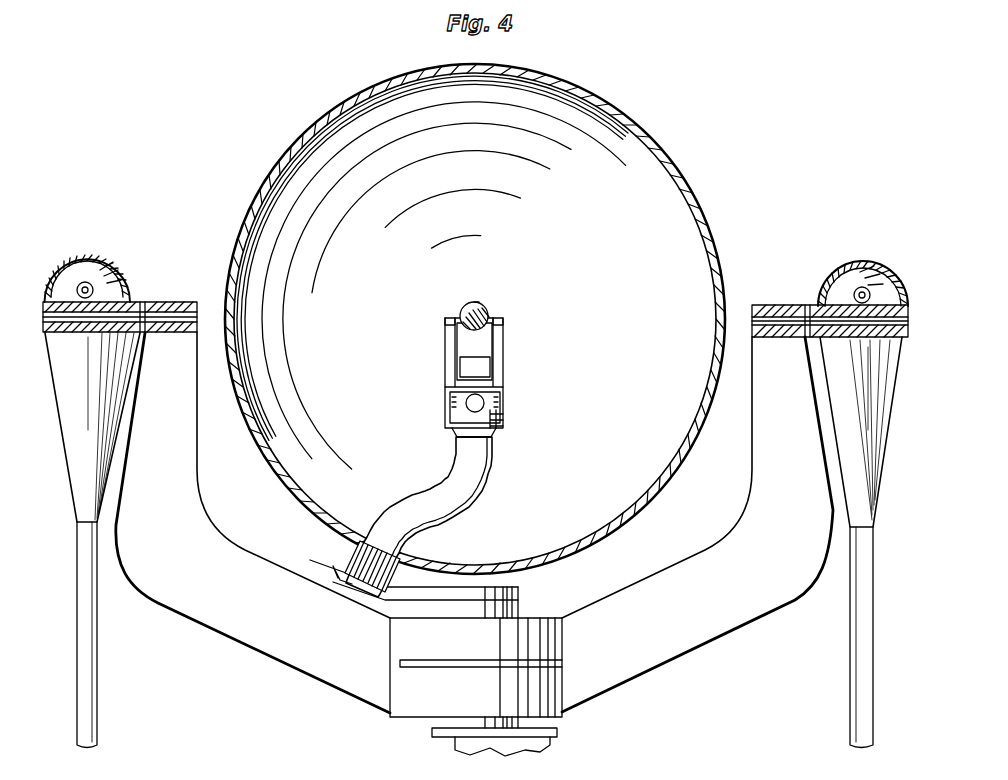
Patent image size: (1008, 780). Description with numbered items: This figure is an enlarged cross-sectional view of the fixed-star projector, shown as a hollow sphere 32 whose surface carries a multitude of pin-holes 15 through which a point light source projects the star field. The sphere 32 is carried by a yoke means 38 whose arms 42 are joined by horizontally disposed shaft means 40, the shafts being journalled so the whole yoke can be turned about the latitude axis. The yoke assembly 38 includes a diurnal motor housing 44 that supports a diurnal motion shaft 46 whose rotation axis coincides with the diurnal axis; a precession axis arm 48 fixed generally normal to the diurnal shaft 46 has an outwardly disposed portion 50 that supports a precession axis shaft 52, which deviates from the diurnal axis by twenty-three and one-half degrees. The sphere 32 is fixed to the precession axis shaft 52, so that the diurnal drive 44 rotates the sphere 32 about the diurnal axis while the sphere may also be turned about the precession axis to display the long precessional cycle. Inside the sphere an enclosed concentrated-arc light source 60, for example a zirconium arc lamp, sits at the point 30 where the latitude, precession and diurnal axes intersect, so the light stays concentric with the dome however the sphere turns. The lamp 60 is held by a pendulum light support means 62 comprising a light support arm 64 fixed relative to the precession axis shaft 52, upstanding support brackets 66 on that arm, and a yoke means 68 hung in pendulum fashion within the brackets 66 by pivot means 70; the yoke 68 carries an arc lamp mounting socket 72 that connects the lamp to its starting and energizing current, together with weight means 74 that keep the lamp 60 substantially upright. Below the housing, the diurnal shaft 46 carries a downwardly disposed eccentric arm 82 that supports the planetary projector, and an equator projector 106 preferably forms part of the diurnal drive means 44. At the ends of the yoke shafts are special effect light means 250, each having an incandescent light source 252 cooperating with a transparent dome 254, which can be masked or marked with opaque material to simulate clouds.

The pin-holes 15 is at (363, 291).
The intersection point of axes 30 is at (488, 312).
The hollow sphere 32 is at (637, 142).
The yoke means 38 is at (496, 668).
The horizontally disposed shaft means 40 is at (186, 311).
The arms 42 is at (208, 610).
The diurnal motor housing 44 is at (573, 697).
The diurnal motion shaft 46 is at (518, 612).
The precession axis arm 48 is at (520, 585).
The outwardly disposed portion 50 is at (352, 578).
The precession axis shaft 52 is at (357, 557).
The concentrated-arc light source 60 is at (480, 304).
The pendulum light support means 62 is at (488, 360).
The light support arm 64 is at (484, 484).
The upstanding support brackets 66 is at (450, 405).
The yoke means 68 is at (506, 356).
The pivot means 70 is at (445, 323).
The arc lamp mounting socket 72 is at (461, 369).
The weight means 74 is at (493, 430).
The eccentric arm 82 is at (443, 742).
The equator projector 106 is at (562, 663).
The special effect light means 250 is at (477, 253).
The incandescent light sources 252 is at (98, 285).
The transparent domes 254 is at (107, 262).